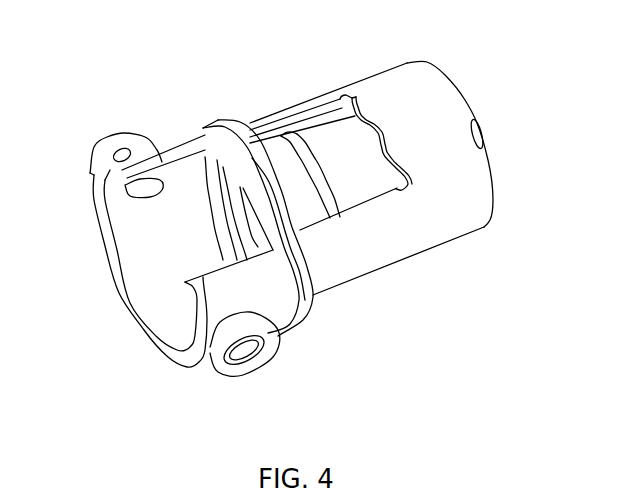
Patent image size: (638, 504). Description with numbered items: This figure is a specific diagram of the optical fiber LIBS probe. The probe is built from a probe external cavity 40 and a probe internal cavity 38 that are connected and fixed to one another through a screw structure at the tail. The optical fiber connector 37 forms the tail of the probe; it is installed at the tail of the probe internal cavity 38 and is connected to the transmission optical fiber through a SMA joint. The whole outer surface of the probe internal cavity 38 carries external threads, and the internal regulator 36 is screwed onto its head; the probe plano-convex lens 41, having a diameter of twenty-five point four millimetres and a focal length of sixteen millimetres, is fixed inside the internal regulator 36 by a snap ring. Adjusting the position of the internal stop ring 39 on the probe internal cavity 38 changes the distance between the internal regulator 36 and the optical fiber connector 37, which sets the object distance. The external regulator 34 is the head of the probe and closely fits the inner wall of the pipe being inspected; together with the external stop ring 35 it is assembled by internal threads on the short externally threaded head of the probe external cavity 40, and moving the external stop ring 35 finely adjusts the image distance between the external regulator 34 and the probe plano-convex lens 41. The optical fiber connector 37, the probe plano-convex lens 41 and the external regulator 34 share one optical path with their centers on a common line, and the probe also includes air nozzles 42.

The external regulator 34 is at (176, 151).
The external stop ring 35 is at (225, 122).
The internal regulator 36 is at (283, 136).
The optical fiber connector 37 is at (478, 127).
The probe internal cavity 38 is at (378, 180).
The internal stop ring 39 is at (338, 201).
The probe external cavity 40 is at (347, 262).
The probe plano-convex lens 41 is at (254, 225).
The air nozzles 42 is at (235, 334).